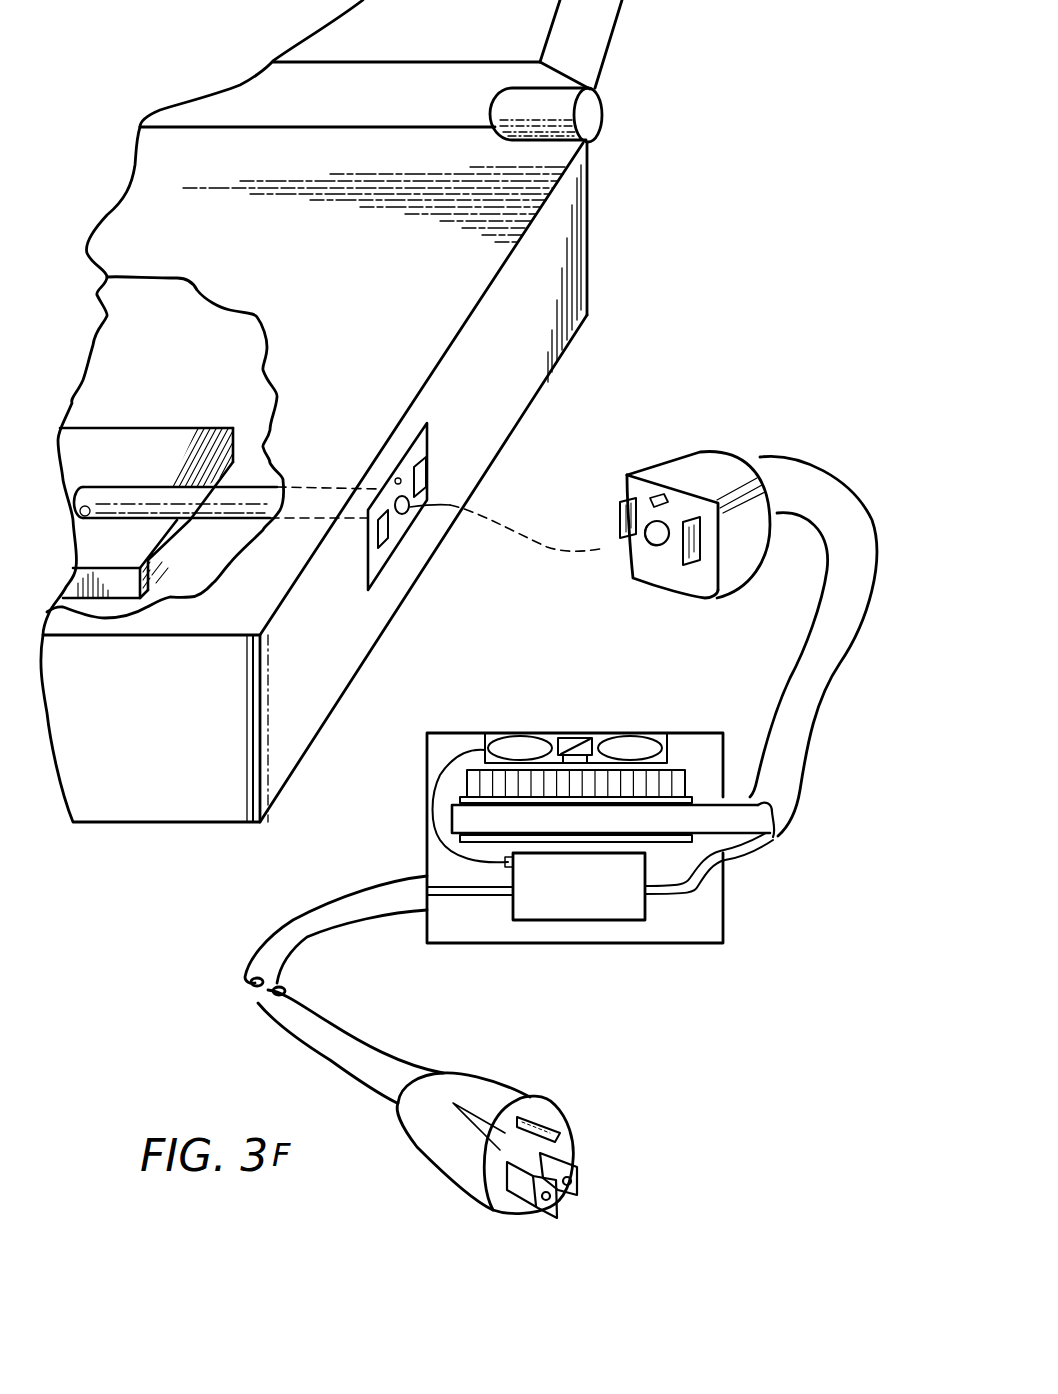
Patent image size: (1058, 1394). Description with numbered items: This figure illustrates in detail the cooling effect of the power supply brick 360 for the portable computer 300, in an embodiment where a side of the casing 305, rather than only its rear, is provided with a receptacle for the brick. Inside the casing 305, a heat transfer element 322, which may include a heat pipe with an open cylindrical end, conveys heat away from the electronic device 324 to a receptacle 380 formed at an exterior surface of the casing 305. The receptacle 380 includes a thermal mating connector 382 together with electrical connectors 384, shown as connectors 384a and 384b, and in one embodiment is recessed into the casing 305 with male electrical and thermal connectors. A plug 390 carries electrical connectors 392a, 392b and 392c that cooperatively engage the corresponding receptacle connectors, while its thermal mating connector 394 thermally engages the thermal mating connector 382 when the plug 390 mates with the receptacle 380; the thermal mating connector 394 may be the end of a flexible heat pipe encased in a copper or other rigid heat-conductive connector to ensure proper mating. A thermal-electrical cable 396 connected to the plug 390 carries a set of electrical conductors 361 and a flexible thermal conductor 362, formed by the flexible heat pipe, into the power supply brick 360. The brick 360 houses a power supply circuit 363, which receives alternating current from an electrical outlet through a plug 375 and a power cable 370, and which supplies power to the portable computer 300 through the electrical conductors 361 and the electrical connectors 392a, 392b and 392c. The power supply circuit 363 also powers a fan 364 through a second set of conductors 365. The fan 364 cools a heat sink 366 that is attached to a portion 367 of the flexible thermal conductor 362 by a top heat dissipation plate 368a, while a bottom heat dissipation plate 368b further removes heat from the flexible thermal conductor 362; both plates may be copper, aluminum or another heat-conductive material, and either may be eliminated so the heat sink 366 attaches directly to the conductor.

The portable computer 300 is at (640, 226).
The casing 305 is at (151, 728).
The heat transfer element 322 is at (238, 495).
The electronic device 324 is at (160, 511).
The receptacle 380 is at (380, 567).
The thermal mating connector 382 is at (410, 509).
The electrical connectors 384 is at (378, 536).
The electrical connector 384a is at (419, 473).
The electrical connector 384b is at (397, 478).
The plug 390 is at (738, 474).
The electrical connector 392a is at (618, 517).
The electrical connector 392b is at (697, 540).
The electrical connector 392c is at (657, 495).
The thermal mating connector 394 is at (652, 545).
The thermal-electrical cable 396 is at (820, 672).
The power supply brick 360 is at (693, 943).
The electrical conductors 361 is at (700, 873).
The flexible thermal conductor 362 is at (740, 822).
The power supply circuit 363 is at (612, 920).
The fan 364 is at (680, 737).
The second set of conductors 365 is at (459, 754).
The heat sink 366 is at (680, 784).
The portion of flexible thermal conductor 367 is at (460, 822).
The top heat dissipation plate 368a is at (463, 798).
The bottom heat dissipation plate 368b is at (462, 838).
The power cable 370 is at (340, 1012).
The plug 375 is at (600, 1191).